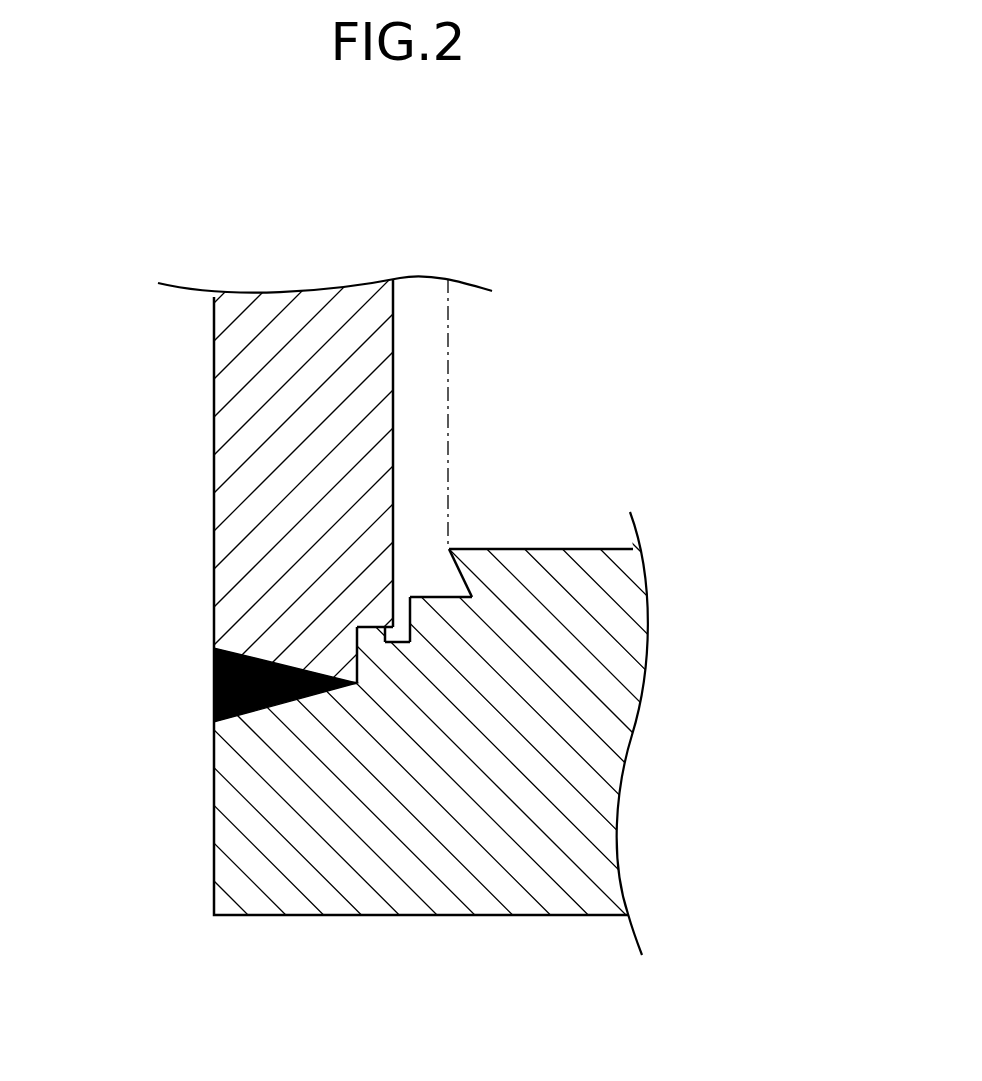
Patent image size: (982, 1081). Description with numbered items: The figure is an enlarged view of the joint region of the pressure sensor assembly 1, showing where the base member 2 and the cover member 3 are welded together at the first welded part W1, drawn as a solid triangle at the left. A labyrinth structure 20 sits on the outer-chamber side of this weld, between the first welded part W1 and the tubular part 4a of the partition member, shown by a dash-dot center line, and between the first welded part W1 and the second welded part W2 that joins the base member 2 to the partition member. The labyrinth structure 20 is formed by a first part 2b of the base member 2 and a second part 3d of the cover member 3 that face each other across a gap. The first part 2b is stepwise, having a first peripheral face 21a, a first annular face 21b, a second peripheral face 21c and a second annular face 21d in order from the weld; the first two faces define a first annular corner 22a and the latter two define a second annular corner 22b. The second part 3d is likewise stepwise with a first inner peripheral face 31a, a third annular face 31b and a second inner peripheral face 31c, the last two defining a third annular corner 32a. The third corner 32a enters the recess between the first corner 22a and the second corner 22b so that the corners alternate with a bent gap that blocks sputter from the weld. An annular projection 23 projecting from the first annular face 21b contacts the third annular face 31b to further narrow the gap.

The joint structure 1 is at (626, 163).
The base member 2 is at (549, 935).
The first part 2b is at (420, 655).
The cover member 3 is at (296, 280).
The second part 3d is at (347, 615).
The tubular part 4a is at (447, 320).
The labyrinth structure 20 is at (410, 568).
The first peripheral face 21a is at (362, 648).
The first annular face 21b is at (408, 638).
The second peripheral face 21c is at (388, 614).
The second annular face 21d is at (460, 549).
The first annular corner 22a is at (392, 642).
The second annular corner 22b is at (420, 605).
The annular projection 23 is at (367, 625).
The first inner peripheral face 31a is at (380, 657).
The third annular face 31b is at (386, 665).
The second inner peripheral face 31c is at (408, 624).
The third annular corner 32a is at (377, 625).
The first welded part W1 is at (214, 684).
The second welded part W2 is at (437, 597).